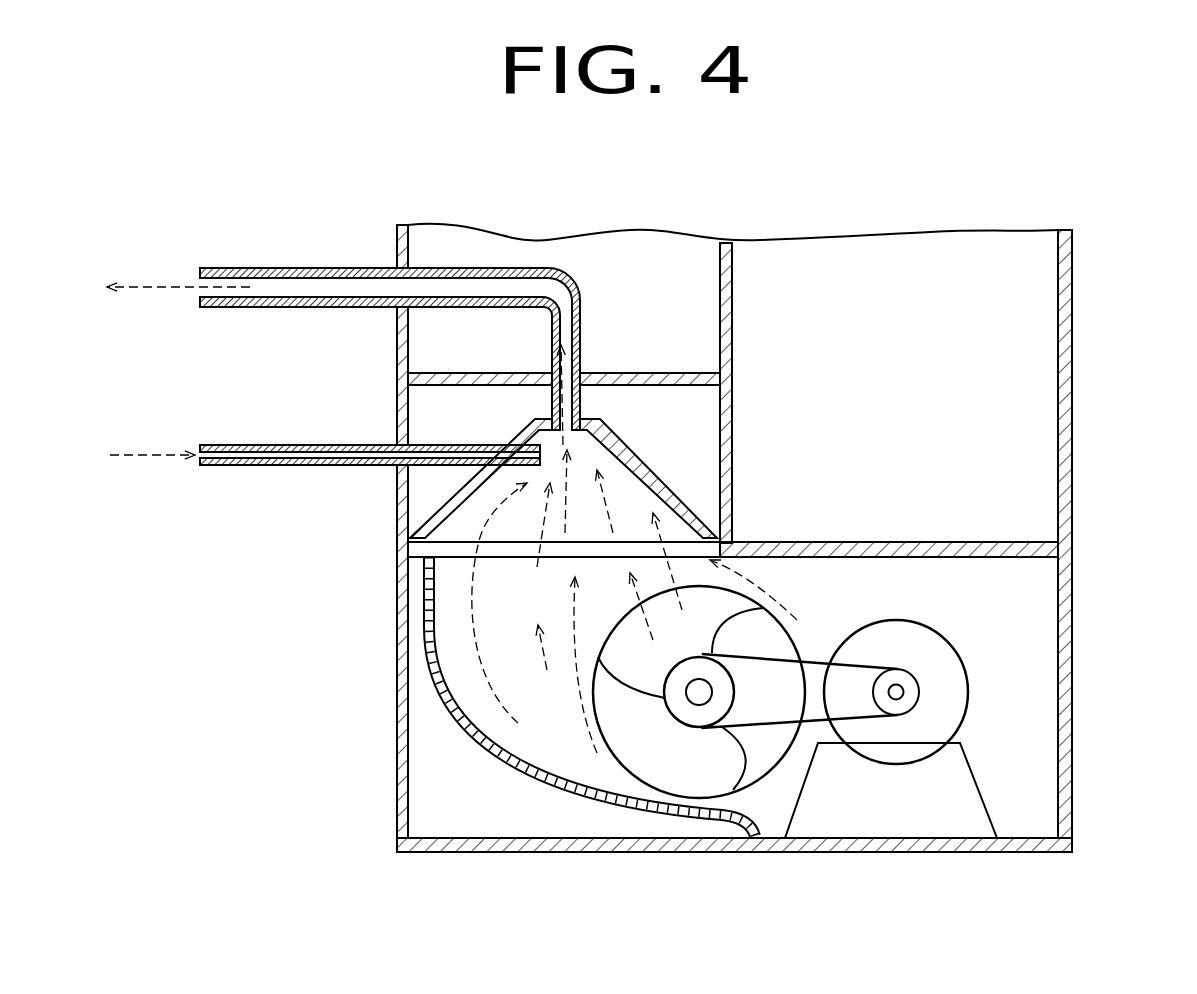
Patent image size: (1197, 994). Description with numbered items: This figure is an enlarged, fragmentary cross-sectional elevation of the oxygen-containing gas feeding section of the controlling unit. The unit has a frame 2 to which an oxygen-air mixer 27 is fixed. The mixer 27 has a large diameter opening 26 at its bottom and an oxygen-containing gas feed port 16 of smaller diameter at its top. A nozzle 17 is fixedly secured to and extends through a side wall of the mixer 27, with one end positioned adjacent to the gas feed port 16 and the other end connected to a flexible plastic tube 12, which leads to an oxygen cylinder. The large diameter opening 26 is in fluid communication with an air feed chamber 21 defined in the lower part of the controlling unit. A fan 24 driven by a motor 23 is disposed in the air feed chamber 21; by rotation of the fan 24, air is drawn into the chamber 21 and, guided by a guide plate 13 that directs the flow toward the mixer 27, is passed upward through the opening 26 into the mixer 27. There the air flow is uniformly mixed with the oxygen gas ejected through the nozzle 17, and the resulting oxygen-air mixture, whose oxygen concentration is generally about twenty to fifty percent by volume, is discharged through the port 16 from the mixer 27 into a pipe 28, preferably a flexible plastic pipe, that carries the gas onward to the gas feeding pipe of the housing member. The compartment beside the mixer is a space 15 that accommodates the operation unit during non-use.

The frame 2 is at (1072, 390).
The flexible plastic tube 12 is at (307, 445).
The guide plate 13 is at (557, 792).
The space 15 is at (1018, 260).
The oxygen-containing gas feed port 16 is at (580, 373).
The nozzle 17 is at (482, 443).
The air feed chamber 21 is at (1030, 622).
The motor 23 is at (950, 697).
The fan 24 is at (717, 767).
The large diameter opening 26 is at (450, 556).
The oxygen-air mixer 27 is at (675, 497).
The pipe 28 is at (292, 268).